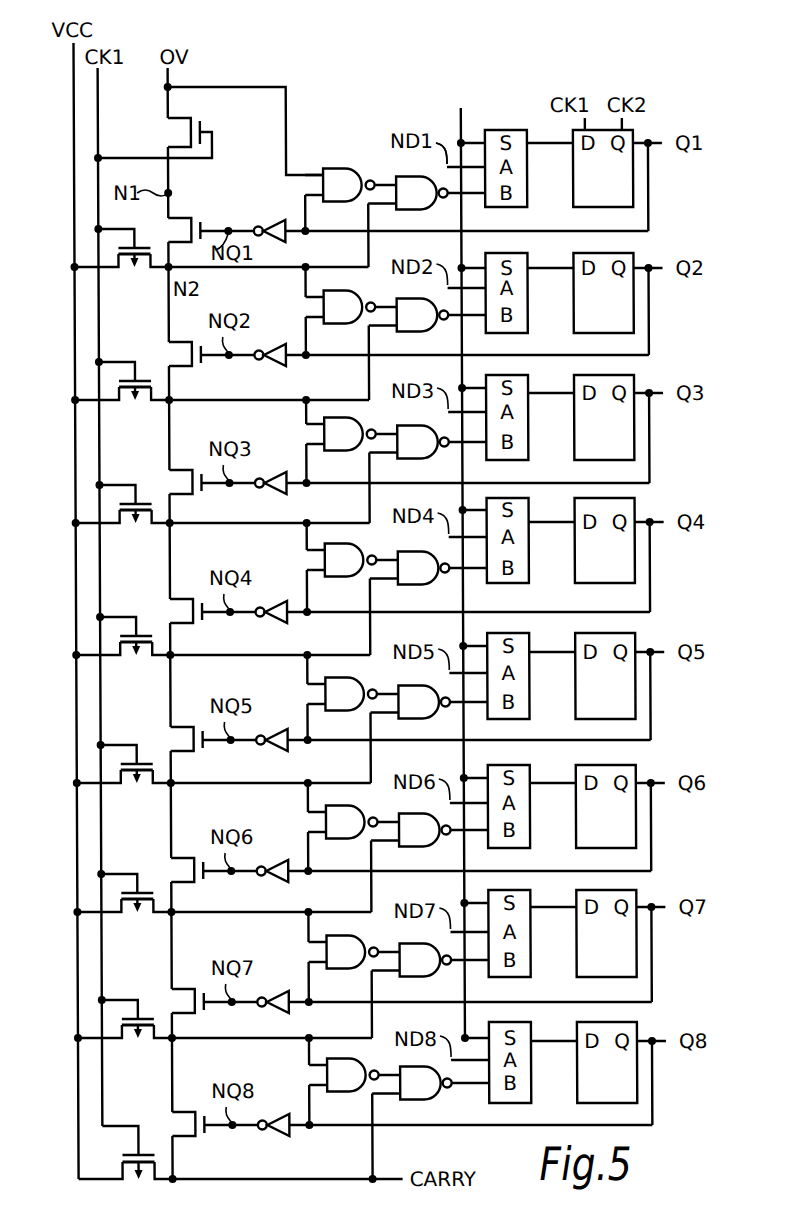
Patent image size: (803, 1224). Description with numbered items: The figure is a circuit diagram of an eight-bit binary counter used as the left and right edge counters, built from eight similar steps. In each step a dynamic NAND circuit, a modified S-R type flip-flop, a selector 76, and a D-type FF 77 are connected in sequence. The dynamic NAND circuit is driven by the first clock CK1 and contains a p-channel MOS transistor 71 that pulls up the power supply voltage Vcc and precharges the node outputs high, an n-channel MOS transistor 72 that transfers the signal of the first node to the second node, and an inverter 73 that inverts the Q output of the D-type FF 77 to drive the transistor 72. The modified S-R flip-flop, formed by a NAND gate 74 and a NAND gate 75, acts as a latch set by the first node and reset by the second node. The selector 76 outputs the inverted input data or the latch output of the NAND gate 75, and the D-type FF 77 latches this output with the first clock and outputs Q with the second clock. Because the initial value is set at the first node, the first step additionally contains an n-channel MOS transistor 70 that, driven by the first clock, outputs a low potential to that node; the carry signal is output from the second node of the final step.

The n-channel MOS transistor 70 is at (197, 127).
The p-channel MOS transistor 71 is at (131, 271).
The n-channel MOS transistor 72 is at (201, 220).
The inverter 73 is at (282, 213).
The NAND gate 74 is at (345, 168).
The NAND gate 75 is at (397, 176).
The selector 76 is at (526, 98).
The D-type FF 77 is at (637, 130).